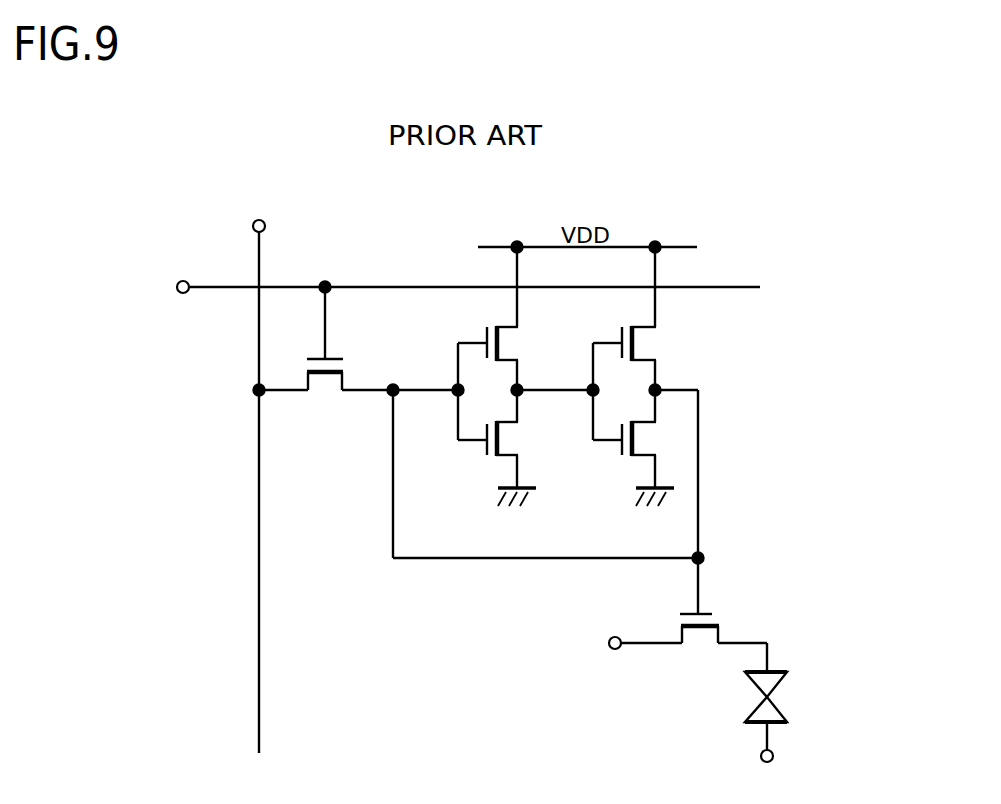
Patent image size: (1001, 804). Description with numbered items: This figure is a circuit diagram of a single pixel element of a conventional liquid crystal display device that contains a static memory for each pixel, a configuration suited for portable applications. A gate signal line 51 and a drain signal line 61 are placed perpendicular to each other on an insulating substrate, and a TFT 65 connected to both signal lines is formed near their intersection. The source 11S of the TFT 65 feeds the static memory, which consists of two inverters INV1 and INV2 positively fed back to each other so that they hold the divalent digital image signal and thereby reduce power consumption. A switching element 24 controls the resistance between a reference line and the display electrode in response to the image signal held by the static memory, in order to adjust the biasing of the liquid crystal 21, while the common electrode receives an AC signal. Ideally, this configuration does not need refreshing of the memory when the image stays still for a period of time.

The drain signal line 61 is at (258, 455).
The gate signal line 51 is at (387, 285).
The TFT 65 is at (326, 389).
The source 11S is at (393, 388).
The inverter INV1 is at (540, 452).
The inverter INV2 is at (670, 346).
The switching element 24 is at (722, 617).
The liquid crystal 21 is at (782, 697).